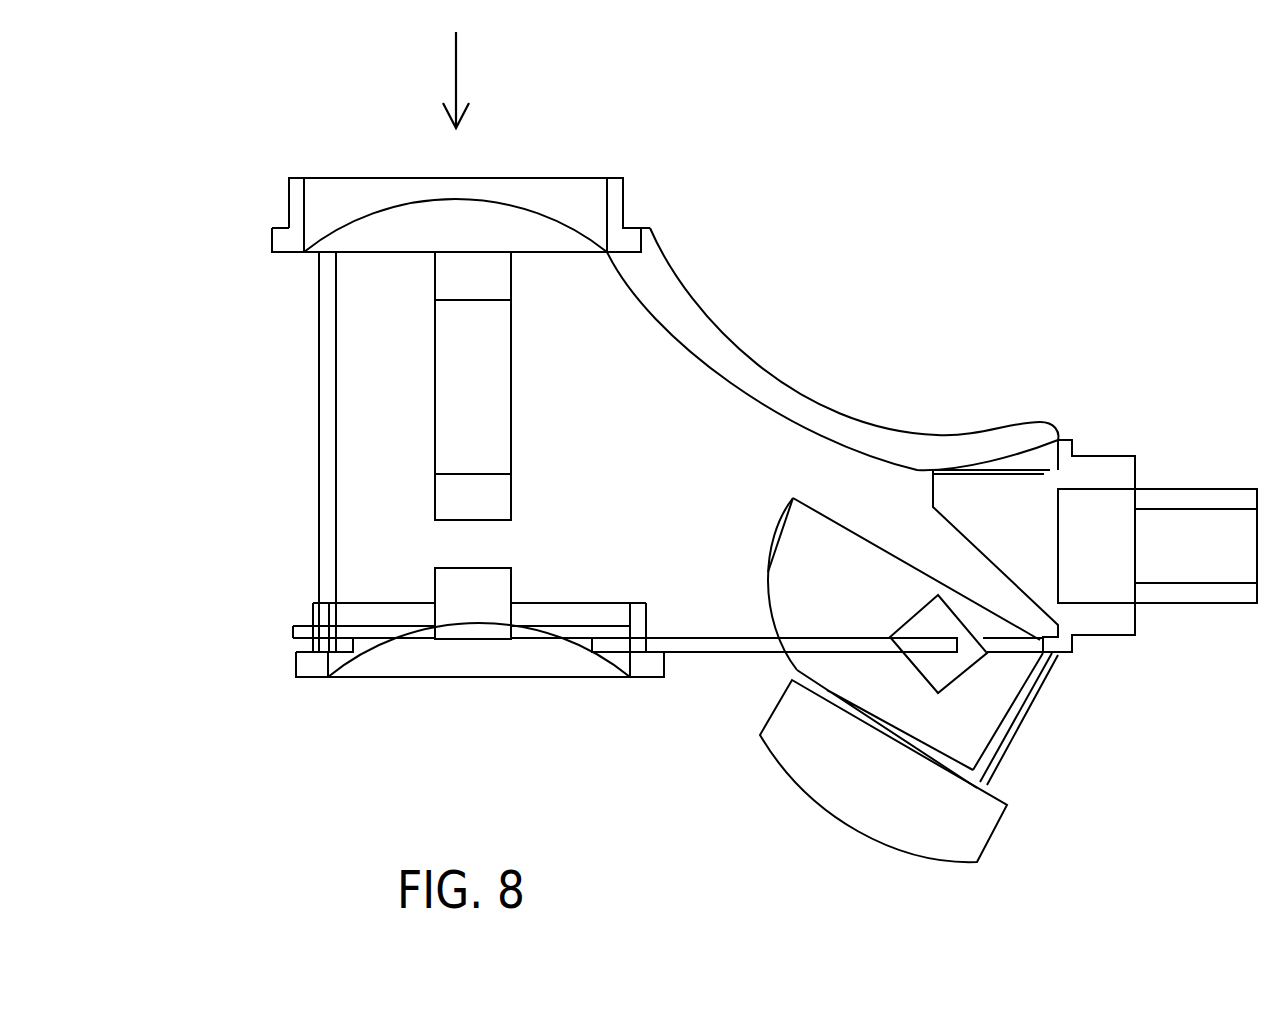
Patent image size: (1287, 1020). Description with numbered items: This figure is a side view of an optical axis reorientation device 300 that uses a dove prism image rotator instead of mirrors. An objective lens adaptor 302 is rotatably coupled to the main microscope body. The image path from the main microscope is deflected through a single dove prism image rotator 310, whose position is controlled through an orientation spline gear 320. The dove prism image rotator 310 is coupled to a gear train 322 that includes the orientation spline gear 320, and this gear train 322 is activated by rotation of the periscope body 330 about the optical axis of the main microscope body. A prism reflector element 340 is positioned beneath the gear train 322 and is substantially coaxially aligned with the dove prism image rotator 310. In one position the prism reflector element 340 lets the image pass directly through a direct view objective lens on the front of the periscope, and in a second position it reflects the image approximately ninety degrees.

The optical axis reorientation device 300 is at (926, 207).
The objective lens adaptor 302 is at (1025, 721).
The dove prism image rotator 310 is at (512, 407).
The orientation spline gear 320 is at (319, 406).
The gear train 322 is at (306, 626).
The periscope body 330 is at (657, 507).
The prism reflector element 340 is at (511, 587).